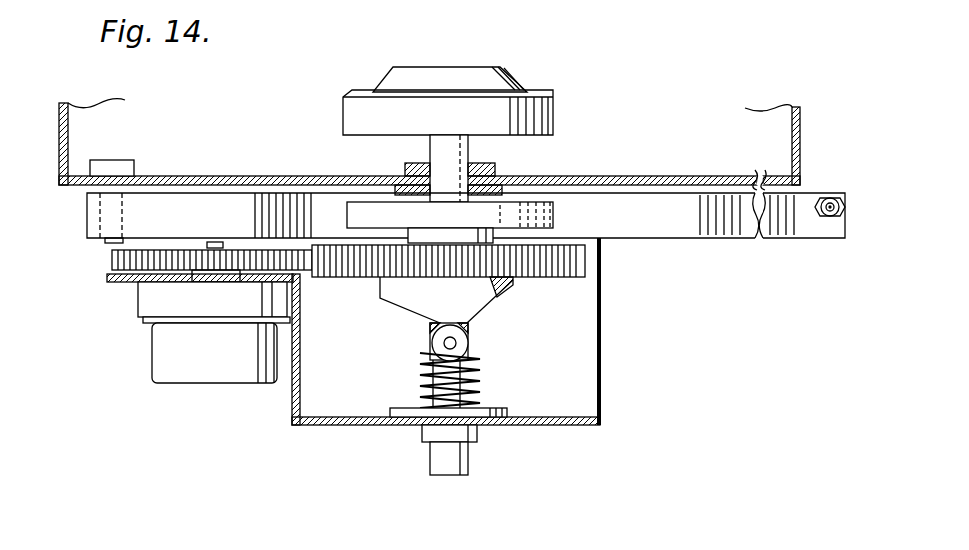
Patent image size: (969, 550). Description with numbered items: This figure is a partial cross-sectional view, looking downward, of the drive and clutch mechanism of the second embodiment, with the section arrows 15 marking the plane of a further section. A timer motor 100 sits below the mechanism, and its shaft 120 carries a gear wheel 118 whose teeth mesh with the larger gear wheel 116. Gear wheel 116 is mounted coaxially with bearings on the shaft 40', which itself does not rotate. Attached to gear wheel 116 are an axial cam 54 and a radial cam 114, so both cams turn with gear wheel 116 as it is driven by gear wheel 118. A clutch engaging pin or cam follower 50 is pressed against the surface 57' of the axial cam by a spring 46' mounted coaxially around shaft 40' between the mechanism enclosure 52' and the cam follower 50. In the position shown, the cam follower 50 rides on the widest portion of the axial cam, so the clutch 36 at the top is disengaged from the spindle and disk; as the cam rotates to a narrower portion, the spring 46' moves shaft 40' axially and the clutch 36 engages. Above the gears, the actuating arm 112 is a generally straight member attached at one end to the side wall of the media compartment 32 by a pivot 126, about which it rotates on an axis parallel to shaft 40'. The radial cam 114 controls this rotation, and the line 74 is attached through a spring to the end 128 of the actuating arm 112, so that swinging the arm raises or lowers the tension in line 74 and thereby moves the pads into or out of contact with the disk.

The section line 15- 15 is at (447, 14).
The media compartment 32 is at (800, 124).
The clutch 36 is at (530, 90).
The actuating arm 112 is at (706, 230).
The end of actuating arm 128 is at (832, 232).
The line 74 is at (834, 198).
The pivot 126 is at (105, 240).
The shaft of timer motor 120 is at (215, 240).
The gear wheel 118 is at (112, 258).
The mechanism enclosure 52' is at (353, 347).
The timer motor 100 is at (165, 344).
The gear wheel 116 is at (585, 262).
The radial cam 114 is at (525, 210).
The axial cam 54 is at (410, 300).
The surface of axial cam 57' is at (508, 303).
The clutch engaging pin or cam follower 50 is at (432, 341).
The spring 46' is at (465, 385).
The shaft 40' is at (483, 450).